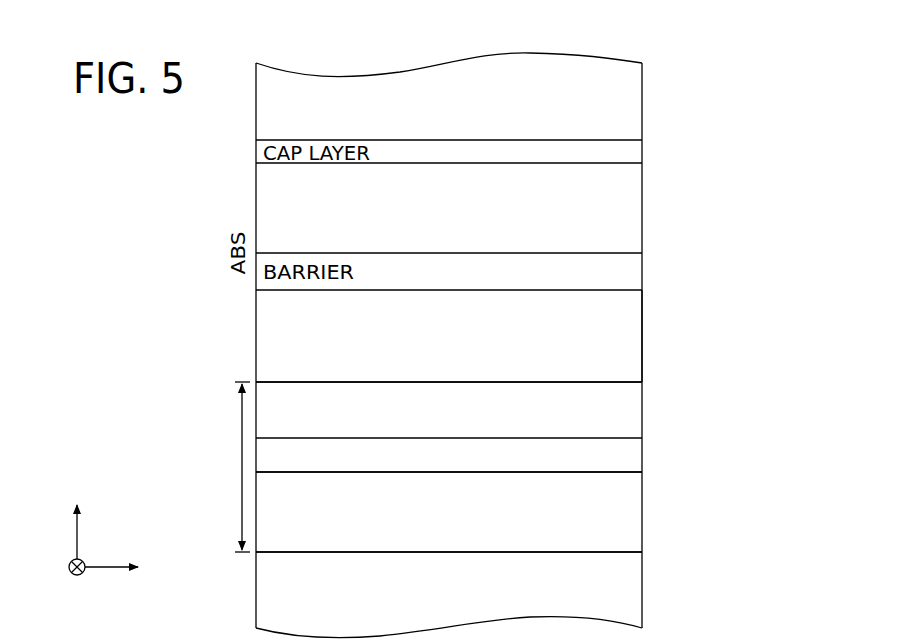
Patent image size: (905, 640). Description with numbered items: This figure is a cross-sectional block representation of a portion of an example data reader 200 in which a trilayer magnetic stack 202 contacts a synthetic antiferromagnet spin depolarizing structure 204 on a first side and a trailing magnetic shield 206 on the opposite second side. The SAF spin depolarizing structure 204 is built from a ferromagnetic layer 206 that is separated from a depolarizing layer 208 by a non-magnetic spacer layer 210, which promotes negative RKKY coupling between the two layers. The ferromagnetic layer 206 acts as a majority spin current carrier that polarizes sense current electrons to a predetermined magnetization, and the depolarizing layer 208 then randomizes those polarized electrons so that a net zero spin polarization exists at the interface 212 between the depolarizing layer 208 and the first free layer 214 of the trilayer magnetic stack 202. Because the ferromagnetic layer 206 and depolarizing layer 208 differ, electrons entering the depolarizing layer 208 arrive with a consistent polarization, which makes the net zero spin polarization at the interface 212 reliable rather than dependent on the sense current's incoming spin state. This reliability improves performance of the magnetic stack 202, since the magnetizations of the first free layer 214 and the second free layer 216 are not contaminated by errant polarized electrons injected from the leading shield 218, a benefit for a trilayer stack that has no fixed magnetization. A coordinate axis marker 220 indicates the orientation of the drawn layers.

The data reader 200 is at (655, 60).
The trilayer magnetic stack 202 is at (655, 302).
The synthetic antiferromagnet spin depolarizing structure 204 is at (227, 467).
The ferromagnetic layer 206 is at (635, 112).
The depolarizing layer 208 is at (635, 420).
The non-magnetic spacer layer 210 is at (635, 465).
The interface 212 is at (646, 382).
The first free layer 214 is at (635, 347).
The second free layer 216 is at (635, 218).
The leading shield 218 is at (635, 603).
The coordinate axes 220 is at (92, 566).